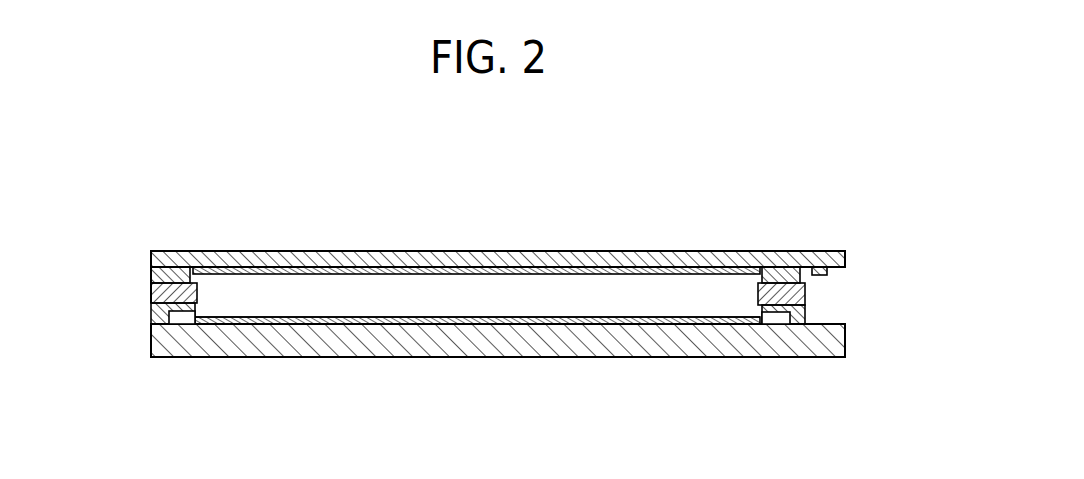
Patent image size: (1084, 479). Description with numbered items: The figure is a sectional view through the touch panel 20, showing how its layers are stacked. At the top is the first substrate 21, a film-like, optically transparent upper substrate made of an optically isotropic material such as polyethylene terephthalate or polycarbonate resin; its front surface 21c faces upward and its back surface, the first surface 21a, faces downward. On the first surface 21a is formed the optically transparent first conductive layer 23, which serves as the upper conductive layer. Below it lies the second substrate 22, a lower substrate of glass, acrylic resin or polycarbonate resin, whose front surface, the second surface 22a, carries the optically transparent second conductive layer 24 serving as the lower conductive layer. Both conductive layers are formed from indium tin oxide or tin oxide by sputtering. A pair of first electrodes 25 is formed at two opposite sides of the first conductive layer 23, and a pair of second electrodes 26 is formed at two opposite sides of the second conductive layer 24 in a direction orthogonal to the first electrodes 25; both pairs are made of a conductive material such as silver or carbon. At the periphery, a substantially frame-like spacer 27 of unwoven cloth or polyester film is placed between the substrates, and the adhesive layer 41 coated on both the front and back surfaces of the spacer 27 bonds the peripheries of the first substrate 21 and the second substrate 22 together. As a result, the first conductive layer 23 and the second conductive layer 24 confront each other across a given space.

The touch panel 20 is at (567, 377).
The first substrate 21 is at (455, 251).
The first surface 21a is at (383, 276).
The front surface 21c is at (387, 273).
The second substrate 22 is at (408, 326).
The second surface 22a is at (510, 318).
The first conductive layer 23 is at (285, 275).
The second conductive layer 24 is at (602, 317).
The first electrodes 25 is at (827, 277).
The second electrodes 26 is at (152, 338).
The spacer 27 is at (188, 267).
The adhesive layer 41 is at (151, 283).